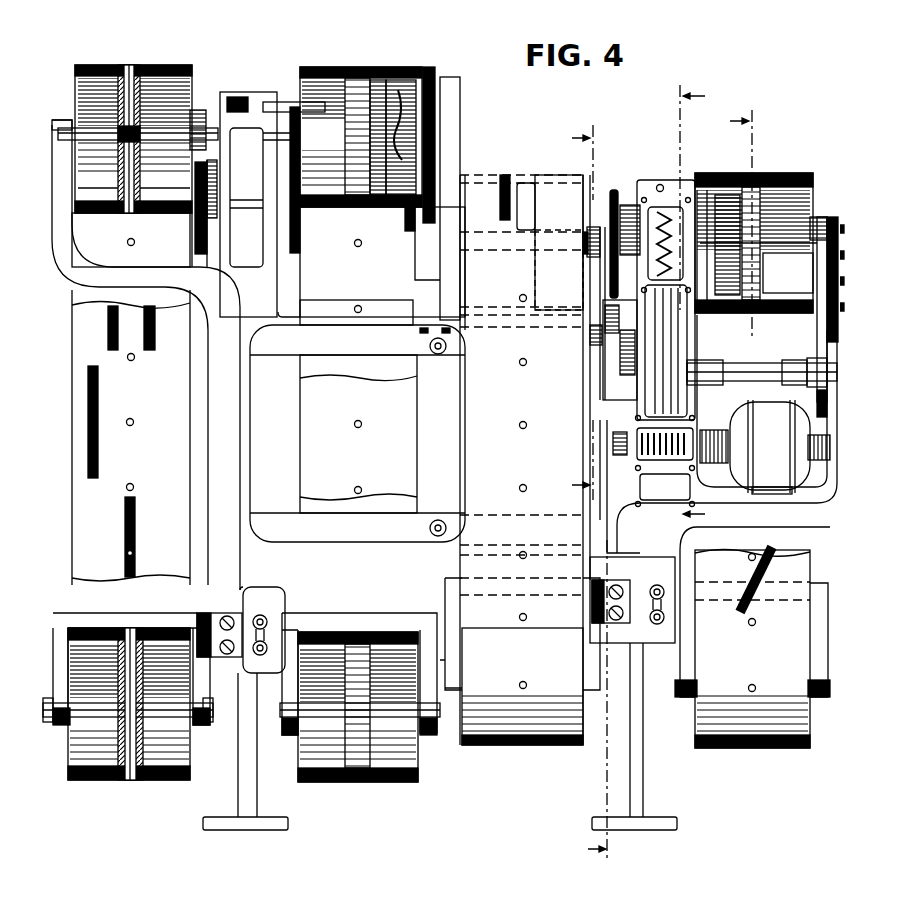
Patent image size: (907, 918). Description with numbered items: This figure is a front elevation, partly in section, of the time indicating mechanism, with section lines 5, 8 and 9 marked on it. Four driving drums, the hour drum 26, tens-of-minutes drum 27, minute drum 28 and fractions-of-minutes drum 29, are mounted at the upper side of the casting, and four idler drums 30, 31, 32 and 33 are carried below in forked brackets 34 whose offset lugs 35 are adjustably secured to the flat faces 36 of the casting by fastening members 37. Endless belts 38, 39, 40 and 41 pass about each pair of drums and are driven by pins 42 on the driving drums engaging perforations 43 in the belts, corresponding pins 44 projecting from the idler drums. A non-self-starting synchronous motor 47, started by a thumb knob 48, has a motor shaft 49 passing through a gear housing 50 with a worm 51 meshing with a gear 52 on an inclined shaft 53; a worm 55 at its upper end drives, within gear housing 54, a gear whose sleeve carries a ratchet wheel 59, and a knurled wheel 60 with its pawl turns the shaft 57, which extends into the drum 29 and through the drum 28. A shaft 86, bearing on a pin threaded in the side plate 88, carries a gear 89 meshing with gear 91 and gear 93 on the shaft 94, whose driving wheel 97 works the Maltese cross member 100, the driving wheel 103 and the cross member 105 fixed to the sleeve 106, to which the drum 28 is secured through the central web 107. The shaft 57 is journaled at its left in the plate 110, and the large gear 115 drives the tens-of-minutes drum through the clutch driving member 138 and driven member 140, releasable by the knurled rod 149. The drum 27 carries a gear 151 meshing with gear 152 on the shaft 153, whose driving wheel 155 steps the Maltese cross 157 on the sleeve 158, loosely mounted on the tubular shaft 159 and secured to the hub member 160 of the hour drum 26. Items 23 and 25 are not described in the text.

The hour drum 26 is at (172, 59).
The pins 42 is at (131, 68).
The sleeve 158 is at (80, 140).
The hub member 160 is at (140, 158).
The six-armed Maltese cross member 157 is at (200, 110).
The tubular shaft 159 is at (207, 130).
The driving wheel 155 is at (195, 238).
The knurled rod 149 is at (245, 97).
The gear 151 is at (277, 140).
The shaft 153 is at (245, 204).
The gear 152 is at (300, 242).
The tens-of-minutes drum 27 is at (318, 68).
The driven clutch member 140 is at (376, 68).
The driving member 138 is at (410, 68).
The large gear 115 is at (436, 68).
The plate 110 is at (415, 244).
The hours belt 38 is at (72, 473).
The perforations 43 is at (135, 357).
The frame 23 is at (250, 393).
The tens-of-minutes belt 39 is at (302, 467).
The screw 25 is at (438, 354).
The minutes belt 40 is at (462, 430).
The idler drum 32 is at (545, 748).
The minute drum 28 is at (547, 175).
The central web 107 is at (537, 226).
The shaft 57 is at (560, 248).
The sleeve 106 is at (587, 240).
The cross member 105 is at (585, 255).
The knurled wheel 60 is at (613, 190).
The ratchet wheel 59 is at (630, 205).
The worm 55 is at (660, 207).
The gear housing 54 is at (680, 190).
The inclined shaft 53 is at (688, 350).
The driving wheel 97 is at (615, 375).
The six-armed Maltese cross member 100 is at (605, 340).
The driving wheel 103 is at (596, 322).
The thumb knob 48 is at (613, 440).
The gear housing 50 is at (637, 450).
The worm 51 is at (675, 462).
The fractions-of-minutes drum 29 is at (788, 175).
The shaft 86 is at (790, 250).
The gear 89 is at (821, 217).
The side plate 88 is at (838, 262).
The gear 91 is at (840, 318).
The shaft 94 is at (760, 363).
The gear 93 is at (828, 402).
The synchronous motor 47 is at (800, 470).
The gear 52 is at (715, 430).
The motor shaft 49 is at (832, 445).
The fractions-of-minutes belt 41 is at (805, 553).
The idler drum 33 is at (792, 748).
The forked brackets 34 is at (55, 673).
The idler drum 30 is at (98, 780).
The pins 44 is at (130, 780).
The flat faces 36 is at (272, 592).
The offset lugs 35 is at (197, 612).
The fastening members 37 is at (258, 616).
The idler drum 31 is at (325, 782).
The section line 9 is at (683, 304).
The section line 5 is at (677, 485).
The section line 8 is at (589, 312).